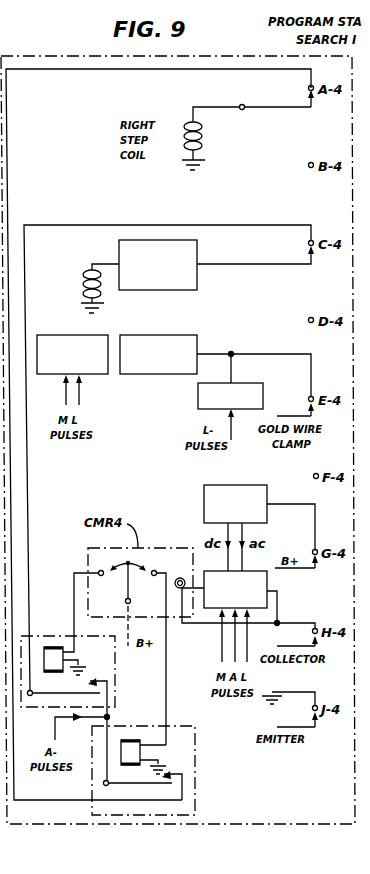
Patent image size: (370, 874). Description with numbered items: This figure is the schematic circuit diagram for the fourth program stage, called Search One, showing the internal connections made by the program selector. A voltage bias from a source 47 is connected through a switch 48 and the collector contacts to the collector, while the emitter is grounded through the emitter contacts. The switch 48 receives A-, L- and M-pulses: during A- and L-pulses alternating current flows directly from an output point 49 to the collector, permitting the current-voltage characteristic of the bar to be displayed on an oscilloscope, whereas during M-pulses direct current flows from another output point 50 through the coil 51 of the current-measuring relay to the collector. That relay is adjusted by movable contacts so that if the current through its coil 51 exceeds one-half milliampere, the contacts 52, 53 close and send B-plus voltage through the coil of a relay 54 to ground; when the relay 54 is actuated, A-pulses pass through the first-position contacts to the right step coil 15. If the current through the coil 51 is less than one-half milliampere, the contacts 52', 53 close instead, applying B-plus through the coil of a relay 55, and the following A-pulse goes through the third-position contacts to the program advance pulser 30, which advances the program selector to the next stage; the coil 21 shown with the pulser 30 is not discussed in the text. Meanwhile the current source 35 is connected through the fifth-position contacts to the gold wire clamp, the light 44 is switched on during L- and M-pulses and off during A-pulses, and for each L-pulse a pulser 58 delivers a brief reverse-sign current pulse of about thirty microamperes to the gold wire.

The right step coil 15 is at (201, 137).
The program advance pulser coil 21 is at (104, 287).
The program advance pulser 30 is at (197, 250).
The current source 35 is at (150, 335).
The light 44 is at (68, 335).
The source 47 is at (204, 492).
The switch 48 is at (218, 610).
The output point 49 is at (271, 594).
The output point 50 is at (201, 588).
The coil 51 is at (178, 577).
The CMR contact 52 is at (153, 658).
The CMR contact 52' is at (77, 595).
The CMR contact 53 is at (126, 572).
The relay 54 is at (195, 773).
The relay 55 is at (115, 658).
The pulser 58 is at (246, 383).